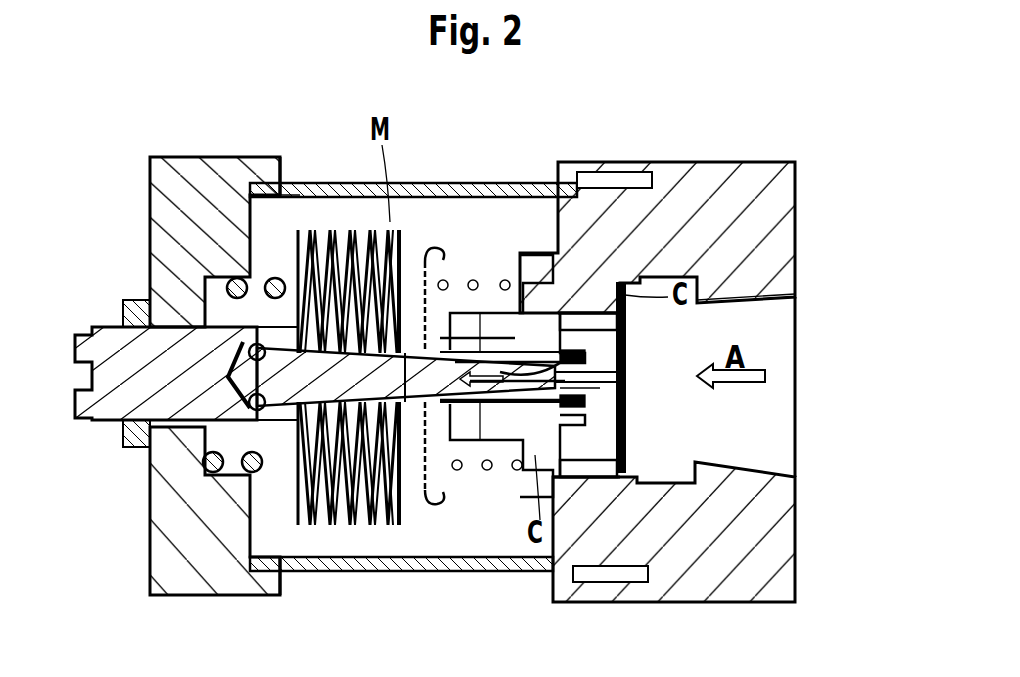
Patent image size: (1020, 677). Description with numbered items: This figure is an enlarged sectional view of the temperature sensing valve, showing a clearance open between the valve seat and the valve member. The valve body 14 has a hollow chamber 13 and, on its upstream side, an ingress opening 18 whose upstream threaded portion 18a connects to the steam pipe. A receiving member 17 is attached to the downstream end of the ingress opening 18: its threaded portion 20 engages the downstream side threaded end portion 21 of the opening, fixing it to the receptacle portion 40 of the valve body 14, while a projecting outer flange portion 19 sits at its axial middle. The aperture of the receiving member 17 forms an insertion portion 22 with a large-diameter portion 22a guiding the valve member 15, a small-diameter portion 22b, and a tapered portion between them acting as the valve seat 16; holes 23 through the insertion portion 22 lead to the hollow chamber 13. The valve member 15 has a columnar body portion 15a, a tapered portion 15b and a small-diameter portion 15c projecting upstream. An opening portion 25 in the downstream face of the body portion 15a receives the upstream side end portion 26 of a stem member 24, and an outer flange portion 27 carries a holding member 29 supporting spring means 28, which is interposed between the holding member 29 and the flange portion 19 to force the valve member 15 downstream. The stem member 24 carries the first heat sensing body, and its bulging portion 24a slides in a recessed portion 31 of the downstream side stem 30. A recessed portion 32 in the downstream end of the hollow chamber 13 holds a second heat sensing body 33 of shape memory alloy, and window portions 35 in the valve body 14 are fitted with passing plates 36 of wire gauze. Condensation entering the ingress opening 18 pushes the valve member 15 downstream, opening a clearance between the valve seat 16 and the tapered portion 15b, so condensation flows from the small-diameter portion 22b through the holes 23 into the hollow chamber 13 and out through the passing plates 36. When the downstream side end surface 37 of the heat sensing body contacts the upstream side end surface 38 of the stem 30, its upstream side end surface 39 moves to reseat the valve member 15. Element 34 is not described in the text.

The hollow chamber 13 is at (326, 222).
The valve body 14 is at (215, 600).
The valve member 15 is at (545, 300).
The body portion 15a is at (410, 473).
The tapered portion 15b is at (585, 340).
The small-diameter portion 15c is at (583, 420).
The valve seat 16 is at (472, 472).
The receiving member 17 is at (565, 300).
The ingress opening 18 is at (752, 449).
The threaded portion 18a is at (797, 303).
The outer flange portion 19 is at (545, 268).
The threaded portion 20 is at (617, 480).
The downstream side threaded end portion 21 is at (598, 443).
The insertion portion 22 is at (462, 572).
The large-diameter portion 22a is at (522, 252).
The small-diameter portion 22b is at (600, 395).
The holes 23 is at (545, 572).
The stem member 24 is at (300, 485).
The bulging portion 24a is at (225, 380).
The opening portion 25 is at (375, 222).
The upstream side end portion 26 is at (458, 305).
The outer flange portion 27 is at (405, 300).
The spring means 28 is at (508, 572).
The holding member 29 is at (430, 252).
The downstream side stem 30 is at (120, 400).
The recessed portion 31 is at (262, 305).
The recessed portion 32 is at (222, 307).
The second heat sensing body 33 is at (228, 200).
The lower lip 34 is at (300, 577).
The window portions 35 is at (302, 178).
The passing plates 36 is at (408, 183).
The downstream side end surface 37 is at (258, 235).
The upstream side end surface 38 is at (235, 470).
The upstream side end surface 39 is at (350, 572).
The receptacle portion 40 is at (752, 172).